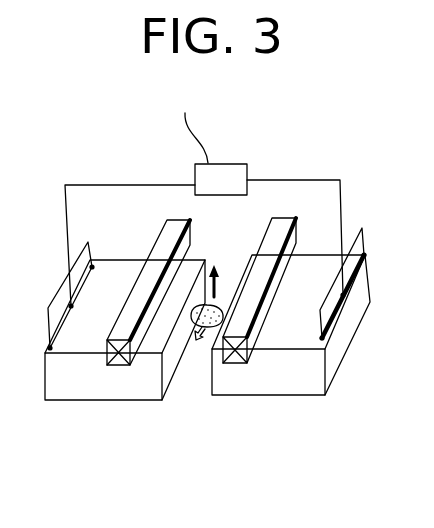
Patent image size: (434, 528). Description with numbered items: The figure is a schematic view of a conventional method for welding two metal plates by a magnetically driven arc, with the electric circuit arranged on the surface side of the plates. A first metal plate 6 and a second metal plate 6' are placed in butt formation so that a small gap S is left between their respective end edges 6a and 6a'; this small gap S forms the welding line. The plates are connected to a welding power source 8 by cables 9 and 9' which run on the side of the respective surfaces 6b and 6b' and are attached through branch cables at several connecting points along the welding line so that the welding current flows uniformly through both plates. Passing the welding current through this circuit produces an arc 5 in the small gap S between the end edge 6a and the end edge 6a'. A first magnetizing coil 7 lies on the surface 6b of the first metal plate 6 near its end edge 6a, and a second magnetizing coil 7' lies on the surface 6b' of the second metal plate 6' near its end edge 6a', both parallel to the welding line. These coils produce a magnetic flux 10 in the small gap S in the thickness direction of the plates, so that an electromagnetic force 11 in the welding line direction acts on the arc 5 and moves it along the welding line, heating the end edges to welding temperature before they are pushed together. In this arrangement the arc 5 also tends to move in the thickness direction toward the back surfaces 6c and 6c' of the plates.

The arc 5 is at (195, 307).
The first metal plate 6 is at (281, 355).
The end edge of the first metal plate 6a is at (281, 356).
The surface of the first metal plate 6b is at (288, 344).
The back surface of the first metal plate 6c is at (268, 403).
The second metal plate 6' is at (105, 362).
The end edge of the second metal plate 6a' is at (167, 354).
The surface of the second metal plate 6b' is at (105, 329).
The back surface of the second metal plate 6c' is at (103, 408).
The first magnetizing coil 7 is at (278, 272).
The second magnetizing coil 7' is at (148, 288).
The welding power source 8 is at (220, 163).
The cable 9 is at (295, 205).
The cable 9' is at (130, 212).
The magnetic flux 10 is at (220, 267).
The electromagnetic force 11 is at (200, 341).
The small gap S is at (230, 272).